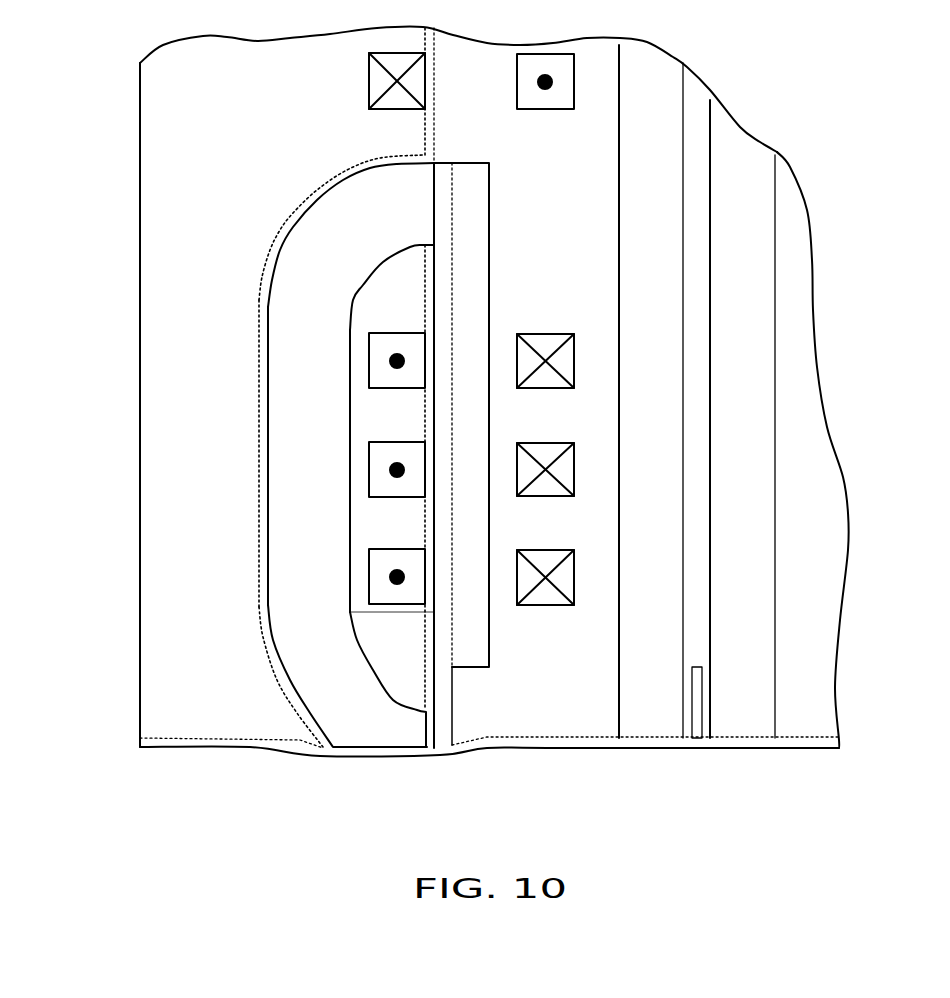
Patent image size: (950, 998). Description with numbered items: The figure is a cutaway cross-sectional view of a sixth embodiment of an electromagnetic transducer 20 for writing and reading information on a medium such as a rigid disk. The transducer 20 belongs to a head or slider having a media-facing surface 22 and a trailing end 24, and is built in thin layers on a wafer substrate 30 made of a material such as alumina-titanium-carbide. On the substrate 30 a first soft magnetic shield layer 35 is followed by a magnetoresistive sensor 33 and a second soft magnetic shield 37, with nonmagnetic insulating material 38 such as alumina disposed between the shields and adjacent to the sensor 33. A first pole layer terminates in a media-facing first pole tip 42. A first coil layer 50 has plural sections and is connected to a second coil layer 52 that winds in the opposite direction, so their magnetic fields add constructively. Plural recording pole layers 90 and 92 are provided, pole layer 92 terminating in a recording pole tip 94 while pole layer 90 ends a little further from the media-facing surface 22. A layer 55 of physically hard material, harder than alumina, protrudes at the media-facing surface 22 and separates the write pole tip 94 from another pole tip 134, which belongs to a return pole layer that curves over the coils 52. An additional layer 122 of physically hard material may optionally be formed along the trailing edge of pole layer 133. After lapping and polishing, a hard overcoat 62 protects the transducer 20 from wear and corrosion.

The electromagnetic transducer 20 is at (113, 55).
The media-facing surface 22 is at (802, 750).
The trailing end 24 is at (138, 540).
The wafer substrate 30 is at (794, 529).
The magnetoresistive sensor 33 is at (702, 667).
The first shield layer 35 is at (729, 461).
The second soft magnetic shield 37 is at (639, 462).
The insulating material 38 is at (702, 549).
The first pole tip 42 is at (637, 738).
The first coil layer 50 is at (574, 370).
The second coil layer 52 is at (369, 362).
The hard layer 55 is at (390, 698).
The overcoat 62 is at (729, 750).
The recording pole layer 90 is at (478, 630).
The pole layer 92 is at (432, 612).
The recording pole tip 94 is at (443, 752).
The additional layer of physically hard material 122 is at (259, 432).
The pole layer 133 is at (286, 489).
The pole tip 134 is at (378, 750).